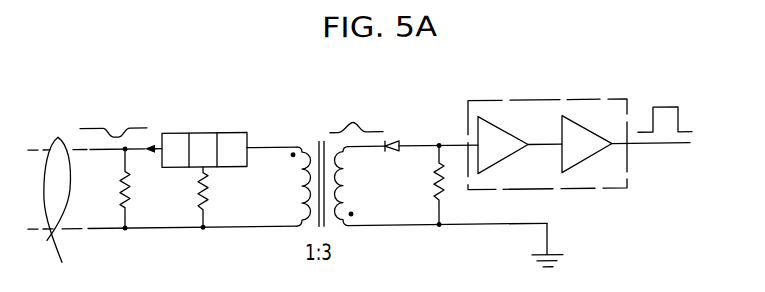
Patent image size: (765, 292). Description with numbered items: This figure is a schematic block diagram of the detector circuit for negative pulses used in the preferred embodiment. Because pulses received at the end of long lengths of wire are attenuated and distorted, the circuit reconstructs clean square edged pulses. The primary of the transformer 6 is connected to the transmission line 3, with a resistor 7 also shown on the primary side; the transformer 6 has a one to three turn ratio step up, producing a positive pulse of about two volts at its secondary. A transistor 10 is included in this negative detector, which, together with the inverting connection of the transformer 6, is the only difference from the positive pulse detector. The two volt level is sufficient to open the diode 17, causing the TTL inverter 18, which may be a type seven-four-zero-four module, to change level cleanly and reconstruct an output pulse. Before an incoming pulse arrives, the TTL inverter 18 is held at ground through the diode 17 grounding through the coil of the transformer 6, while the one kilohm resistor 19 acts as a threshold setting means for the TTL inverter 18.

The transmission line 3 is at (60, 210).
The transformer 6 is at (324, 136).
The resistor 7 is at (122, 185).
The transistor 10 is at (207, 135).
The diode 17 is at (398, 146).
The TTL inverter 18 is at (628, 119).
The 1K resistor 19 is at (431, 185).